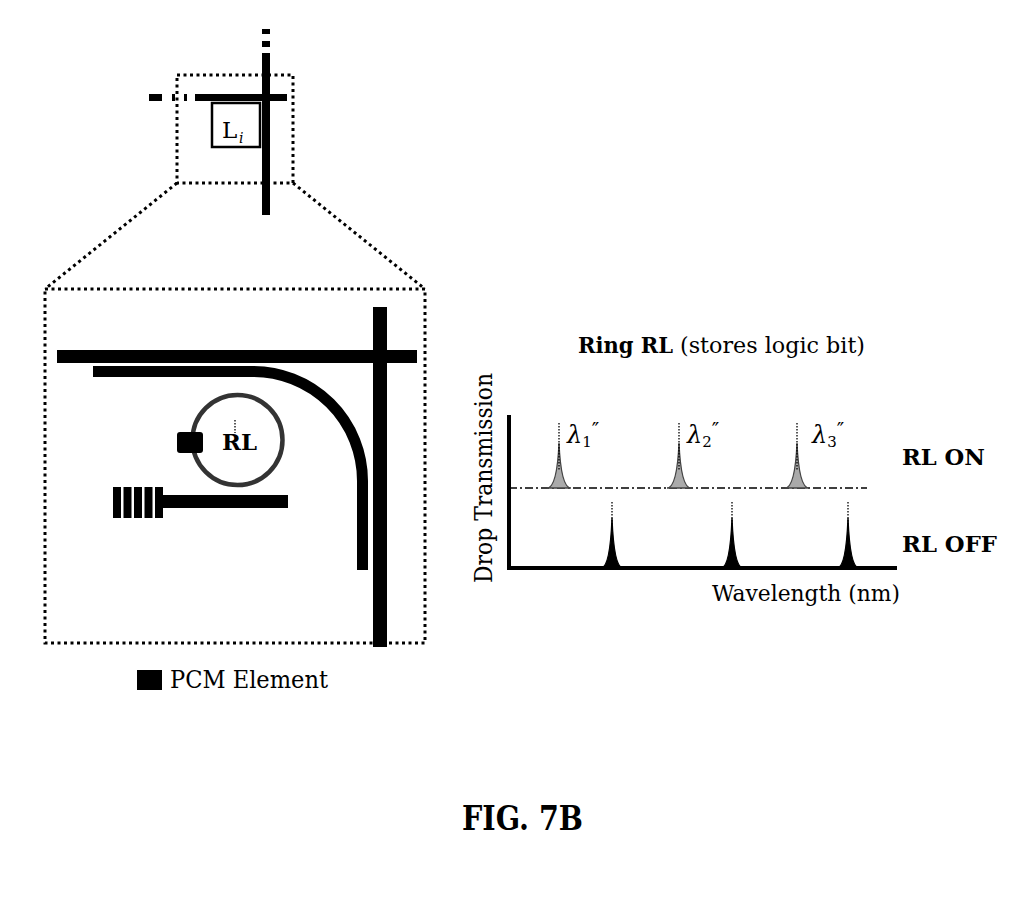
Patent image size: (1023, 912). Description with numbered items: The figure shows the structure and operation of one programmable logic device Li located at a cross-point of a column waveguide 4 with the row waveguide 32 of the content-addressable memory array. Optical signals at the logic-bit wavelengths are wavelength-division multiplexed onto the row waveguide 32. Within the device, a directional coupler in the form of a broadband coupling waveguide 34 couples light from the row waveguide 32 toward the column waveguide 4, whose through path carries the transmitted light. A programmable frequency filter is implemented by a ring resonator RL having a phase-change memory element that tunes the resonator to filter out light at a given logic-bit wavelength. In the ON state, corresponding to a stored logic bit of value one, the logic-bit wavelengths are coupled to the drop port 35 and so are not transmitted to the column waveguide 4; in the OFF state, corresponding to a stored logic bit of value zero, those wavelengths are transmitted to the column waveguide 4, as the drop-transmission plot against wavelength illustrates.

The column waveguide 4 is at (372, 330).
The row waveguide 32 is at (256, 349).
The broadband coupling waveguide 34 is at (323, 404).
The drop port 35 is at (285, 492).